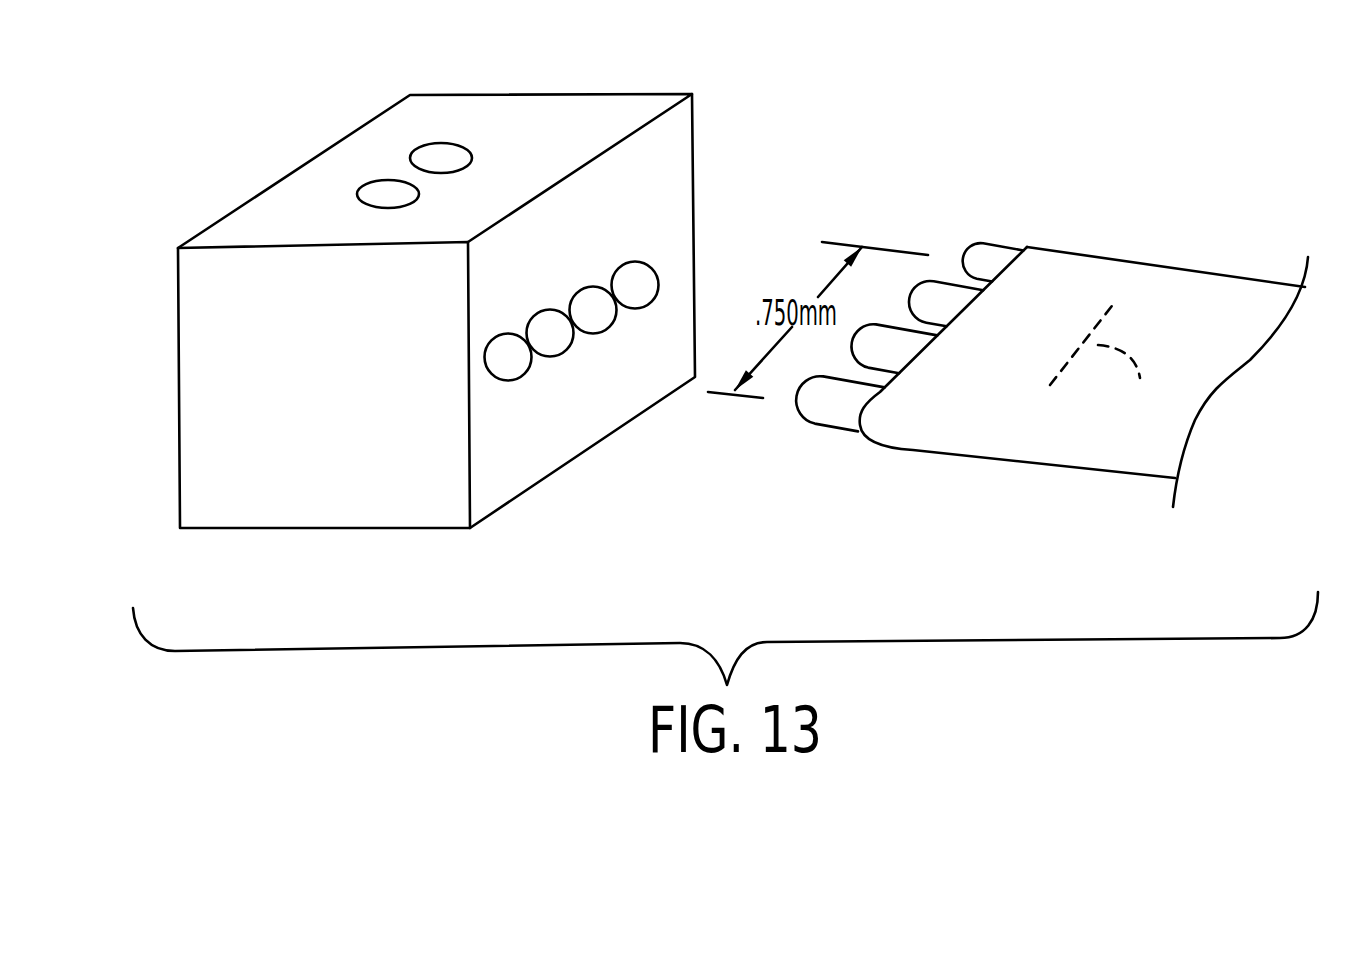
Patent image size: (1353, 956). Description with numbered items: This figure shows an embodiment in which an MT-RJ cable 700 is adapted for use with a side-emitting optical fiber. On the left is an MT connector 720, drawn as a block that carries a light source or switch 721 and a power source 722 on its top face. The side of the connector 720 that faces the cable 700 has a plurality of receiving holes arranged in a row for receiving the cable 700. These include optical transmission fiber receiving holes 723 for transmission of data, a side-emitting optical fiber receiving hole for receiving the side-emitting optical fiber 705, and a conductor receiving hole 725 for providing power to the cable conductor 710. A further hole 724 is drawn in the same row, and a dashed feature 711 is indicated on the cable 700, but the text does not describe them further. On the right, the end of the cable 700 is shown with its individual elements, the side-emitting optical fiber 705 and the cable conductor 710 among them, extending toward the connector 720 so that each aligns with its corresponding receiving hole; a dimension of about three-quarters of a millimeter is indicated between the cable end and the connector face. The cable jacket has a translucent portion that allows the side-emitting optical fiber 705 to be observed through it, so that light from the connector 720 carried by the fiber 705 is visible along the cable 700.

The cable 700 is at (1052, 393).
The side-emitting optical fiber 705 is at (950, 302).
The cable conductor 710 is at (905, 342).
The dashed palm line 711 is at (1101, 361).
The MT connector 720 is at (323, 530).
The light source or switch 721 is at (440, 153).
The power source 722 is at (384, 193).
The optical transmission fiber receiving holes 723 is at (503, 363).
The side aperture 724 is at (592, 313).
The conductor receiving hole 725 is at (548, 335).